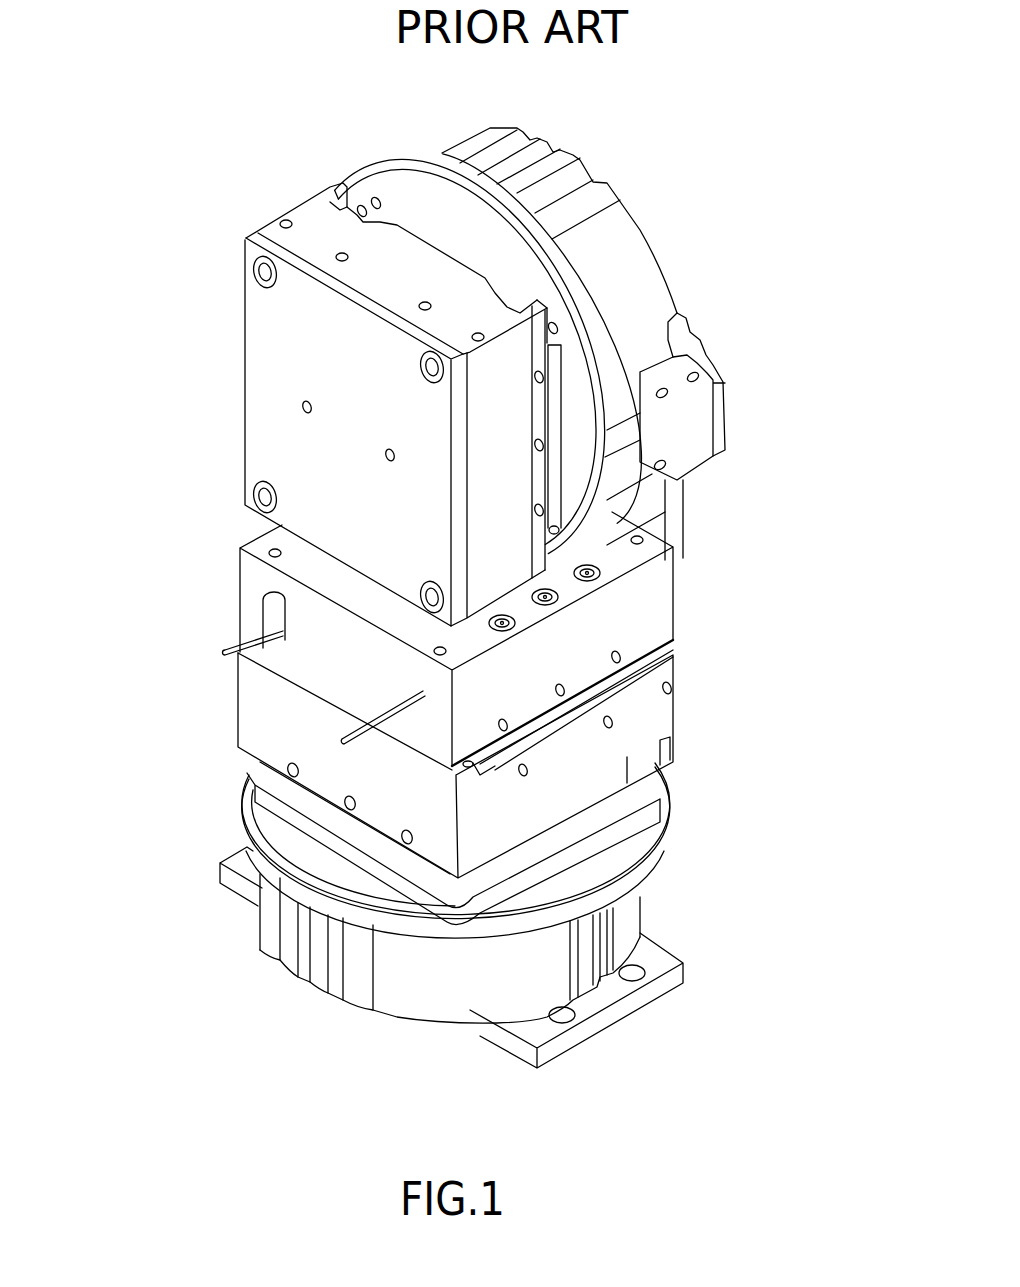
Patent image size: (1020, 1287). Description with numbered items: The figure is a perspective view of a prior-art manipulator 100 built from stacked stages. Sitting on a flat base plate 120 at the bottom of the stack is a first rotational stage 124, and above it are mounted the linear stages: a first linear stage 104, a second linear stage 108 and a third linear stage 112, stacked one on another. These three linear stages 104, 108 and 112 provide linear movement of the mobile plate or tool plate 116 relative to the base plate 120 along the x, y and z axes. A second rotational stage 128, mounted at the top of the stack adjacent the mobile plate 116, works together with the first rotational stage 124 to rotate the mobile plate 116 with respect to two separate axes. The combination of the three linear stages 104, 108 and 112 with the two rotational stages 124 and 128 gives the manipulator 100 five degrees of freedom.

The manipulator 100 is at (485, 1133).
The first linear stage 104 is at (648, 718).
The second linear stage 108 is at (637, 597).
The third linear stage 112 is at (320, 220).
The mobile plate or tool plate 116 is at (282, 441).
The base plate 120 is at (673, 980).
The first rotational stage 124 is at (330, 920).
The second rotational stage 128 is at (620, 272).